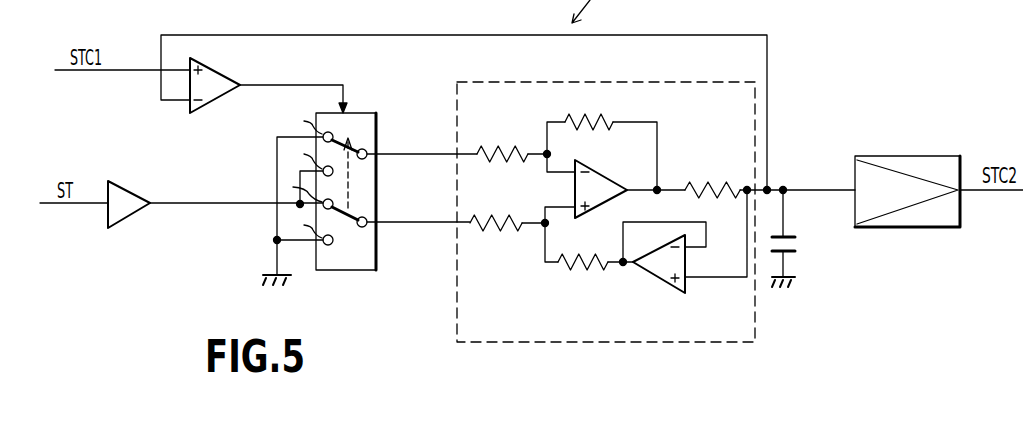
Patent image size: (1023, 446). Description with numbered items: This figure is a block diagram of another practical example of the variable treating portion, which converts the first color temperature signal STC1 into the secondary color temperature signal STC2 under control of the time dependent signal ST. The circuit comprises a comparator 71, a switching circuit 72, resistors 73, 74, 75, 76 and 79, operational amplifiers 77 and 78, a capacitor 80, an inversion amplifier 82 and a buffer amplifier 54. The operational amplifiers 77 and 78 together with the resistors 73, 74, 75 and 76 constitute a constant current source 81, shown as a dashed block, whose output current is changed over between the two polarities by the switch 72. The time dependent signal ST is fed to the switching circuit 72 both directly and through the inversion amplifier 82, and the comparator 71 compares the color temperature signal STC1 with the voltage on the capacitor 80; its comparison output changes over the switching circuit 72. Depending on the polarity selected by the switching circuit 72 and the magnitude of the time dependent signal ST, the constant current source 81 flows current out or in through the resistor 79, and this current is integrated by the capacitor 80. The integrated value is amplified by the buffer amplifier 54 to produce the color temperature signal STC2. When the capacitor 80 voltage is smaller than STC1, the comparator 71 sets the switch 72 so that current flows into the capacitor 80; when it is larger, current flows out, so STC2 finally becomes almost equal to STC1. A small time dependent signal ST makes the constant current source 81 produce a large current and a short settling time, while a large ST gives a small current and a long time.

The buffer amplifier 54 is at (903, 156).
The comparator 71 is at (220, 98).
The switching circuit 72 is at (368, 113).
The resistor 73 is at (500, 146).
The resistor 74 is at (608, 122).
The resistor 75 is at (495, 230).
The resistor 76 is at (585, 270).
The operational amplifier 77 is at (602, 175).
The operational amplifier 78 is at (652, 278).
The resistor 79 is at (705, 181).
The capacitor 80 is at (797, 245).
The constant current source 81 is at (568, 342).
The inversion amplifier 82 is at (140, 210).